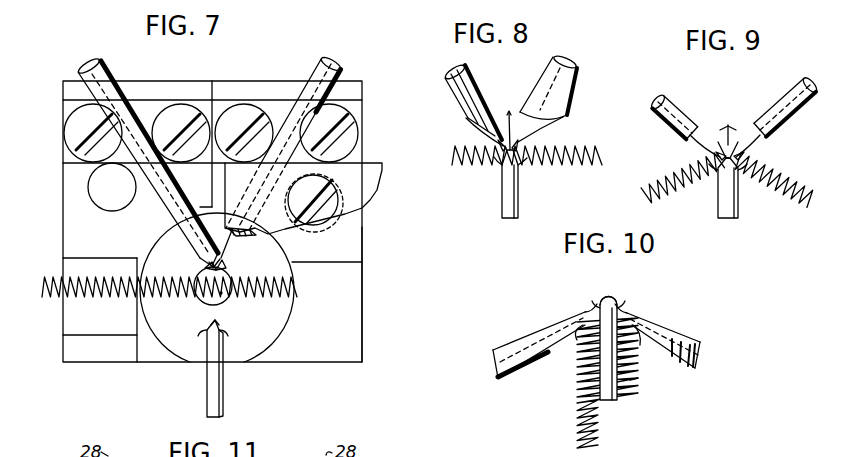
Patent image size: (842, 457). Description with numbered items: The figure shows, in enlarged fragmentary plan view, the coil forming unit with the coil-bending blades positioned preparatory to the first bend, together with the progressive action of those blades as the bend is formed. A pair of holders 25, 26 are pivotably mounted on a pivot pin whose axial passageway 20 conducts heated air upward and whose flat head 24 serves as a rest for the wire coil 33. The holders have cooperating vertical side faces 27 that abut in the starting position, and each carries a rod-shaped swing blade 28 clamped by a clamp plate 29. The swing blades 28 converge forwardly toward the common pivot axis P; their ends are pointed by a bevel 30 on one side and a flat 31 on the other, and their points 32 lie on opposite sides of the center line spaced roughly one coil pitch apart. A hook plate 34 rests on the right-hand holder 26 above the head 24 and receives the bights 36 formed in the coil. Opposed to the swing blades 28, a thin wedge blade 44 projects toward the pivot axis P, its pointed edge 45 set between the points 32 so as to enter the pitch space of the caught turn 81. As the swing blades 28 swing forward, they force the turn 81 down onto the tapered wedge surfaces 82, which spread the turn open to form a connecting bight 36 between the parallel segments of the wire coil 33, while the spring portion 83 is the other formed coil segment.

In FIG. 7, the axial passageway 20 is at (224, 308).
In FIG. 7, the head 24 is at (277, 340).
In FIG. 7, the holder 25 is at (72, 233).
In FIG. 7, the holder 26 is at (352, 243).
In FIG. 7, the vertical side faces 27 is at (212, 95).
In FIG. 7, the swing blade 28 is at (104, 75).
In FIG. 8, the swing blade 28 is at (547, 82).
In FIG. 9, the swing blade 28 is at (675, 108).
In FIG. 10, the swing blade 28 is at (532, 340).
In FIG. 7, the clamp plate 29 is at (148, 110).
In FIG. 7, the beveled side 30 is at (213, 260).
In FIG. 9, the beveled side 30 is at (719, 146).
In FIG. 10, the beveled side 30 is at (583, 311).
In FIG. 7, the flat 31 is at (197, 253).
In FIG. 8, the flat 31 is at (466, 123).
In FIG. 9, the flat 31 is at (697, 142).
In FIG. 10, the flat 31 is at (567, 332).
In FIG. 7, the point 32 is at (198, 270).
In FIG. 8, the point 32 is at (498, 143).
In FIG. 9, the point 32 is at (717, 153).
In FIG. 7, the wire coil 33 is at (117, 296).
In FIG. 8, the wire coil 33 is at (468, 167).
In FIG. 9, the wire coil 33 is at (673, 192).
In FIG. 10, the wire coil 33 is at (578, 427).
In FIG. 7, the hook plate 34 is at (377, 172).
In FIG. 10, the bight 36 is at (608, 297).
In FIG. 7, the wedge blade 44 is at (210, 395).
In FIG. 8, the wedge blade 44 is at (513, 202).
In FIG. 9, the wedge blade 44 is at (738, 207).
In FIG. 10, the wedge blade 44 is at (612, 398).
In FIG. 7, the pointed edge 45 is at (212, 323).
In FIG. 8, the turn 81 is at (509, 118).
In FIG. 9, the turn 81 is at (729, 125).
In FIG. 7, the wedge surface 82 is at (202, 327).
In FIG. 8, the wedge surface 82 is at (502, 167).
In FIG. 9, the wedge surface 82 is at (720, 172).
In FIG. 10, the wedge surface 82 is at (598, 303).
In FIG. 9, the second coil spring 83 is at (783, 198).
In FIG. 10, the second coil spring 83 is at (637, 382).
In FIG. 7, the pivot axis P is at (221, 293).